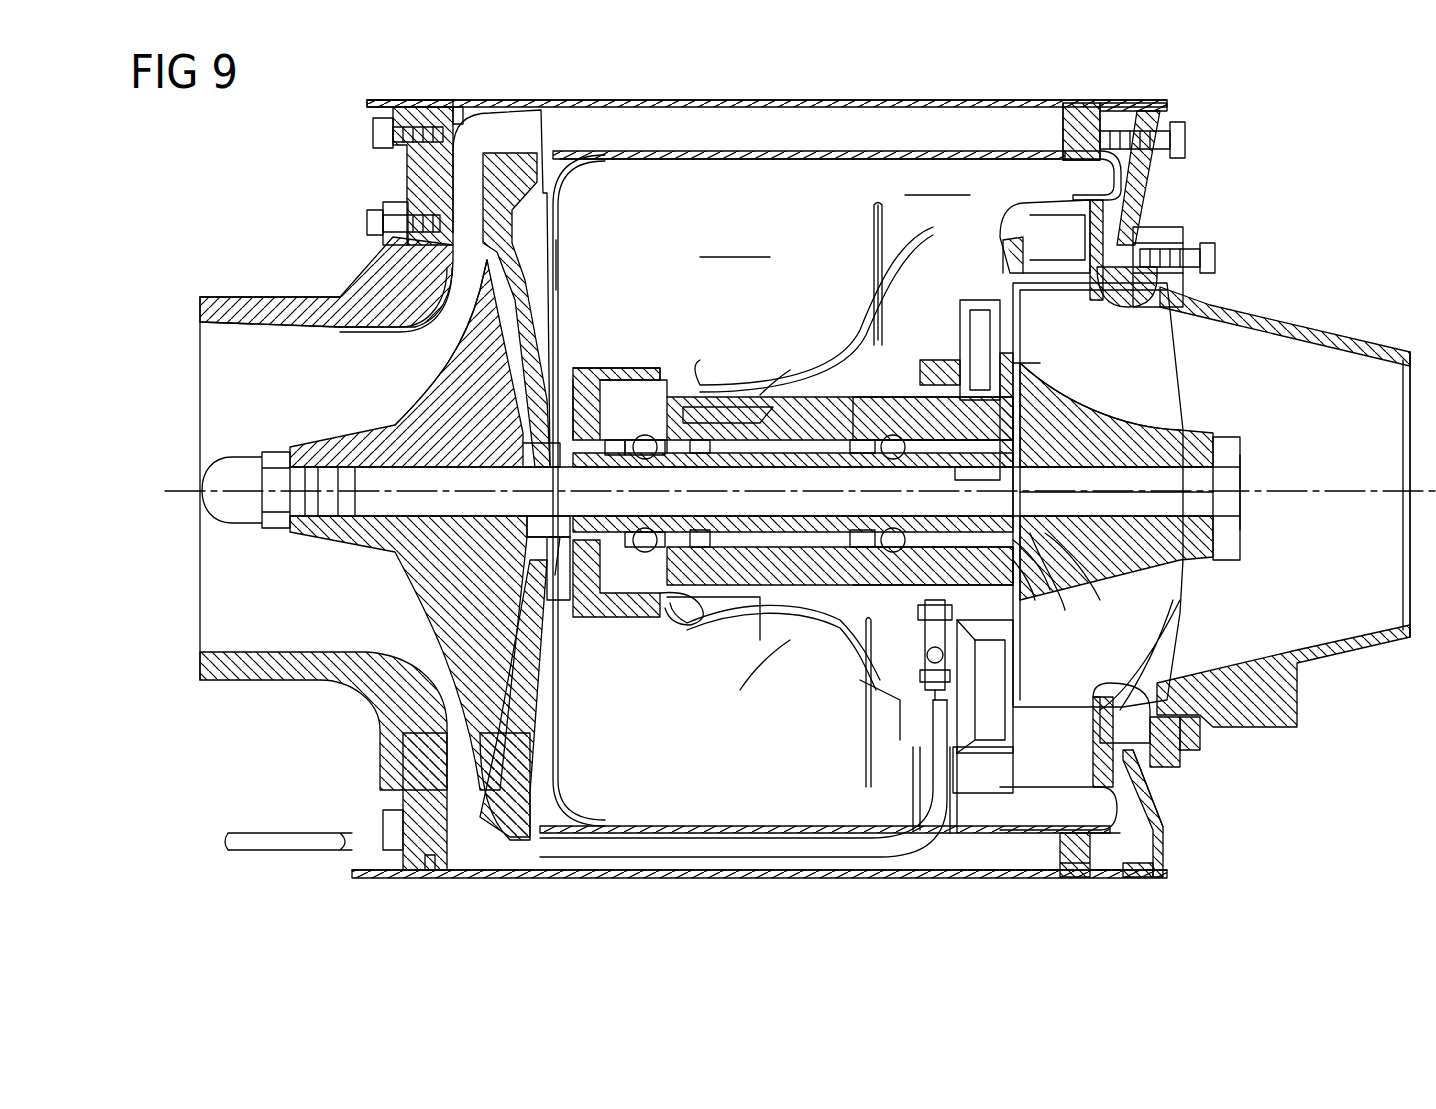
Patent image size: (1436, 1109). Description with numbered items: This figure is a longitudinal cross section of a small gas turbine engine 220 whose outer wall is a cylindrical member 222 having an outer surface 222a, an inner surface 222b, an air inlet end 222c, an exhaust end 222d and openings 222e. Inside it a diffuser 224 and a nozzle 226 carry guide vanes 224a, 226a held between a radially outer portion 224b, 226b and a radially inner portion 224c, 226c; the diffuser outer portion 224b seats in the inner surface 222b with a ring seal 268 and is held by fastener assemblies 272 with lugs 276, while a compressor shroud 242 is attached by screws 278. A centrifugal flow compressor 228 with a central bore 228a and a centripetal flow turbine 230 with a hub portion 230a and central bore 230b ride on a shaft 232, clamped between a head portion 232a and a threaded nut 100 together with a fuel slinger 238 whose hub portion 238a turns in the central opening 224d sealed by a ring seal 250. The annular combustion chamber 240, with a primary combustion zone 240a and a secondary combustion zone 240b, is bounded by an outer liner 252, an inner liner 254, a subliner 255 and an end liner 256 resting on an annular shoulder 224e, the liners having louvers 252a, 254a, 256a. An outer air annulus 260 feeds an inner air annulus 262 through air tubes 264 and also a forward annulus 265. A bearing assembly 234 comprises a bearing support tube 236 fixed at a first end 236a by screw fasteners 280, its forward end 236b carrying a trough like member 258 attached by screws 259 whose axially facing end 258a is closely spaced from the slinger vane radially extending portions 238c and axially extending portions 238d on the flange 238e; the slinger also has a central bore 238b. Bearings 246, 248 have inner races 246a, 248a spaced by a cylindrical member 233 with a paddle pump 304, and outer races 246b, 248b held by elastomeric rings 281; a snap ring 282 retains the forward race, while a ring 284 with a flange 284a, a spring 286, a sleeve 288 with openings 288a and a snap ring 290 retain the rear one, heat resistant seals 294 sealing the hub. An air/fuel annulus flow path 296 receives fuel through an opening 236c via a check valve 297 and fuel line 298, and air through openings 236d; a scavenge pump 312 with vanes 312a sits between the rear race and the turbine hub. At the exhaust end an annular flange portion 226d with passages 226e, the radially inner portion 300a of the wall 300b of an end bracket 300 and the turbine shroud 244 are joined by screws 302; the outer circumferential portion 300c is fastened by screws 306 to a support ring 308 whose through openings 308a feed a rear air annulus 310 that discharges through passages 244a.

The threaded nut 100 is at (235, 457).
The small gas turbine engine 220 is at (1335, 212).
The cylindrical member 222 is at (770, 878).
The outer surface 222a is at (830, 878).
The inner surface 222b is at (975, 878).
The air inlet end 222c is at (345, 860).
The exhaust end 222d is at (1170, 106).
The openings 222e is at (400, 100).
The diffuser 224 is at (480, 880).
The guide vanes 224a is at (510, 862).
The radially outer portion 224b is at (470, 182).
The radially inner portion 224c is at (420, 782).
The central opening 224d is at (500, 457).
The annular shoulder 224e is at (553, 562).
The nozzle 226 is at (1045, 200).
The guide vanes 226a is at (1068, 150).
The radially outer portion 226b is at (1065, 297).
The radially inner portion 226c is at (1035, 202).
The annular flange portion 226d is at (1140, 785).
The passages 226e is at (1115, 685).
The centrifugal flow compressor 228 is at (335, 364).
The central bore 228a is at (420, 417).
The centripetal flow turbine 230 is at (1190, 382).
The hub portion 230a is at (1060, 575).
The central bore 230b is at (1240, 512).
The shaft 232 is at (385, 522).
The head portion 232a is at (1230, 457).
The cylindrical member 233 is at (750, 630).
The bearing assembly 234 is at (820, 392).
The bearing support tube 236 is at (720, 397).
The first end 236a is at (1013, 662).
The forward end 236b is at (665, 642).
The opening 236c is at (885, 702).
The openings 236d is at (950, 362).
The fuel slinger 238 is at (605, 622).
The hub portion 238a is at (560, 532).
The central bore 238b is at (600, 464).
The radially extending portions 238c is at (590, 370).
The axially extending portions 238d is at (665, 397).
The axially extending flange 238e is at (650, 368).
The annular combustion chamber 240 is at (813, 150).
The primary combustion zone 240a is at (700, 262).
The secondary combustion zone 240b is at (970, 200).
The compressor shroud 242 is at (345, 692).
The turbine shroud 244 is at (1215, 295).
The passages 244a is at (1180, 640).
The antifriction bearing 246 is at (690, 427).
The inner race 246a is at (690, 467).
The outer race 246b is at (590, 602).
The antifriction bearing 248 is at (895, 417).
The inner race 248a is at (860, 465).
The outer race 248b is at (870, 567).
The ring seal 250 is at (550, 517).
The radially outer liner 252 is at (890, 148).
The louvers 252a is at (615, 160).
The radially inner liner 254 is at (878, 252).
The louvers 254a is at (805, 652).
The subliner 255 is at (878, 215).
The end liner 256 is at (560, 217).
The louvers 256a is at (560, 267).
The trough like member 258 is at (680, 612).
The axially facing end 258a is at (570, 572).
The screws 259 is at (580, 414).
The outer air annulus 260 is at (700, 108).
The inner air annulus 262 is at (790, 647).
The air tubes 264 is at (930, 814).
The forward annulus 265 is at (550, 150).
The ring seal 268 is at (430, 872).
The fastener assemblies 272 is at (345, 130).
The lugs 276 is at (390, 152).
The screws 278 is at (367, 224).
The screw fasteners 280 is at (1020, 362).
The rings of elastomeric material 281 is at (645, 530).
The snap ring 282 is at (615, 530).
The ring 284 is at (905, 530).
The flange 284a is at (960, 472).
The spring 286 is at (925, 398).
The sleeve 288 is at (1045, 590).
The openings 288a is at (1030, 447).
The snap ring 290 is at (1030, 430).
The heat resistant seals 294 is at (1050, 500).
The air/fuel annulus flow path 296 is at (780, 394).
The check valve 297 is at (920, 692).
The fuel line 298 is at (770, 838).
The annular end bracket 300 is at (1180, 862).
The radially inner portion 300a is at (1190, 757).
The wall 300b is at (1160, 814).
The outer circumferential portion 300c is at (1158, 880).
The screws 302 is at (1215, 258).
The paddle pump 304 is at (775, 530).
The screws 306 is at (1186, 140).
The support ring 308 is at (1090, 118).
The through openings 308a is at (1060, 880).
The rear air annulus 310 is at (1107, 860).
The scavenge pump 312 is at (1165, 178).
The vanes 312a is at (1030, 507).